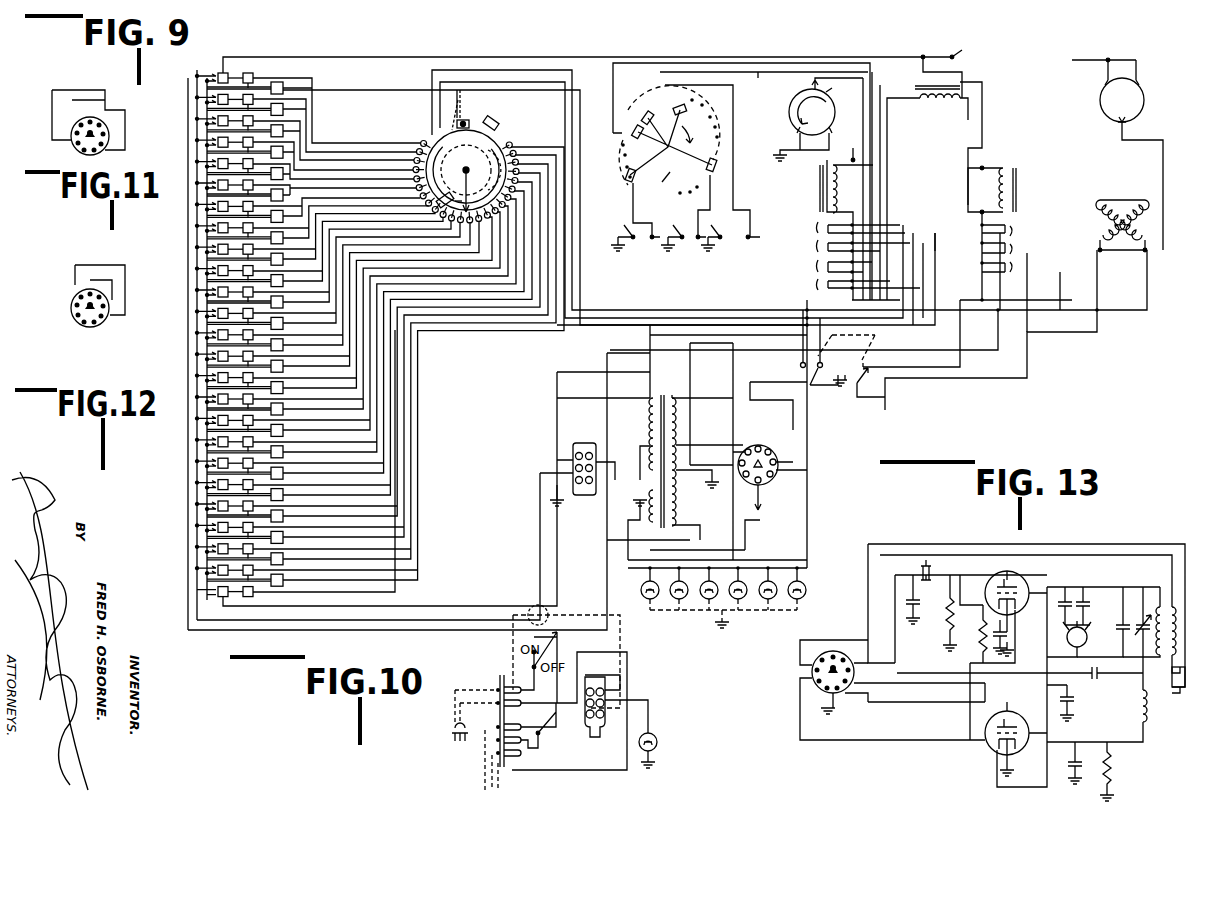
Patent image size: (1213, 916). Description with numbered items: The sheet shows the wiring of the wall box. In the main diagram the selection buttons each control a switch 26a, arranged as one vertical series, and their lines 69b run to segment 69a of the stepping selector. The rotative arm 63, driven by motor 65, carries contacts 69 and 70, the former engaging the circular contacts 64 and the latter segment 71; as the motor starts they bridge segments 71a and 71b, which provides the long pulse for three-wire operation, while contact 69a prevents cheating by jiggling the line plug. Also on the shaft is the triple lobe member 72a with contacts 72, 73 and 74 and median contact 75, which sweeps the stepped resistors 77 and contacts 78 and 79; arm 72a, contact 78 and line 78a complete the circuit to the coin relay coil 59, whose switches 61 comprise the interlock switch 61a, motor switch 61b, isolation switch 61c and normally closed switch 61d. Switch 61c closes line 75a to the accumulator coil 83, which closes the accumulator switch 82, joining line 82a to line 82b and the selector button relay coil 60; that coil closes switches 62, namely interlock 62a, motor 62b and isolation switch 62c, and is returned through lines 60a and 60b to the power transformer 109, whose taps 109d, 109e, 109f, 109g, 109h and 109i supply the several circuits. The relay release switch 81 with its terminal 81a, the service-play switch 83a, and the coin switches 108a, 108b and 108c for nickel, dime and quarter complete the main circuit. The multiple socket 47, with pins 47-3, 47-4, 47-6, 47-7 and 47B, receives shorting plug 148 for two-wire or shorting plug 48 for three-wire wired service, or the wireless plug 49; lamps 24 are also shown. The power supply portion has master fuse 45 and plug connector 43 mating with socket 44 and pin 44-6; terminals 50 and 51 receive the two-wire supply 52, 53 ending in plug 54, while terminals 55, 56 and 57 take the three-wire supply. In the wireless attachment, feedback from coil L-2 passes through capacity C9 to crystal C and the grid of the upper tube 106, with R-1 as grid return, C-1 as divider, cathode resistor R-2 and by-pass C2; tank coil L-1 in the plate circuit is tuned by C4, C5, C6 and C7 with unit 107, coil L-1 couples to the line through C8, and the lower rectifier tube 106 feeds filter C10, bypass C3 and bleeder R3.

In FIG. 11, the shorting plug 148 is at (70, 150).
In FIG. 12, the shorting plug 48 is at (72, 304).
In FIG. 9, the switch 26a is at (213, 600).
In FIG. 9, the contacts 64 is at (422, 140).
In FIG. 9, the rotative arm 63 is at (454, 110).
In FIG. 9, the contact 69 is at (470, 118).
In FIG. 9, the segment 69a is at (469, 199).
In FIG. 9, the line 69b is at (497, 330).
In FIG. 9, the contact 70 is at (458, 191).
In FIG. 9, the contacts 71 is at (472, 151).
In FIG. 9, the segment 71a is at (495, 130).
In FIG. 9, the segment 71b is at (470, 168).
In FIG. 9, the contact 72 is at (668, 147).
In FIG. 9, the triple lobe member 72a is at (677, 180).
In FIG. 9, the contact 73 is at (643, 201).
In FIG. 9, the contact 74 is at (703, 197).
In FIG. 9, the median contact 75 is at (666, 140).
In FIG. 9, the line 75a is at (758, 78).
In FIG. 9, the stepped resistors 77 is at (620, 148).
In FIG. 9, the contact 78 is at (638, 132).
In FIG. 9, the line 78a is at (716, 63).
In FIG. 9, the contact 79 is at (645, 110).
In FIG. 9, the relay release switch 81 is at (798, 120).
In FIG. 9, the counter terminal 81a is at (828, 103).
In FIG. 9, the accumulator switch 82 is at (958, 52).
In FIG. 9, the line 82a is at (800, 57).
In FIG. 9, the line 82b is at (984, 110).
In FIG. 9, the accumulator coil 83 is at (936, 106).
In FIG. 9, the testing and use switch 83a is at (855, 388).
In FIG. 9, the coin relay coil 59 is at (808, 182).
In FIG. 9, the selector button relay coil 60 is at (955, 186).
In FIG. 9, the line 60a is at (903, 189).
In FIG. 9, the line 60b is at (905, 192).
In FIG. 9, the switches 61 is at (810, 240).
In FIG. 9, the interlock switch 61a is at (815, 224).
In FIG. 9, the motor switch 61b is at (815, 242).
In FIG. 9, the isolation switch 61c is at (815, 264).
In FIG. 9, the switch 61d is at (815, 286).
In FIG. 9, the switches 62 is at (1025, 246).
In FIG. 9, the interlock switch 62a is at (1012, 228).
In FIG. 9, the motor switch 62b is at (1012, 246).
In FIG. 9, the isolation long pulse and selection switch 62c is at (1012, 268).
In FIG. 9, the motor 65 is at (1122, 255).
In FIG. 9, the coin switch 108a is at (628, 234).
In FIG. 9, the coin switch 108b is at (688, 236).
In FIG. 9, the coin switch 108c is at (736, 237).
In FIG. 9, the power transformer 109 is at (656, 478).
In FIG. 9, the tap 109d is at (684, 470).
In FIG. 9, the tap 109e is at (652, 398).
In FIG. 9, the tap 109f is at (650, 446).
In FIG. 9, the tap 109g is at (650, 460).
In FIG. 9, the tap 109h is at (680, 445).
In FIG. 9, the tap 109i is at (680, 400).
In FIG. 9, the socket type connector 44 is at (586, 498).
In FIG. 9, the pin 44-6 is at (575, 487).
In FIG. 9, the multiple socket 47 is at (780, 476).
In FIG. 9, the pin 47-3 is at (740, 460).
In FIG. 9, the pin 47-4 is at (748, 449).
In FIG. 9, the socket pin 47-6 is at (768, 449).
In FIG. 9, the pin 47-7 is at (774, 459).
In FIG. 9, the socket pin 47B is at (778, 462).
In FIG. 9, the lamps 24 is at (800, 584).
In FIG. 10, the master fuse 45 is at (546, 612).
In FIG. 10, the terminal 50 is at (502, 678).
In FIG. 10, the terminal 51 is at (497, 703).
In FIG. 10, the two-wire supply 52 is at (456, 694).
In FIG. 10, the two-wire supply 53 is at (458, 720).
In FIG. 10, the plug 54 is at (458, 740).
In FIG. 10, the terminal 55 is at (484, 763).
In FIG. 10, the terminal 56 is at (490, 772).
In FIG. 10, the terminal 57 is at (499, 780).
In FIG. 10, the plug type connector 43 is at (594, 737).
In FIG. 13, the plug 49 is at (830, 694).
In FIG. 13, the tube 106 is at (1002, 571).
In FIG. 13, the tuning unit 107 is at (1078, 648).
In FIG. 13, the crystal C is at (926, 560).
In FIG. 13, the condenser C-1 is at (912, 600).
In FIG. 13, the resistance R-1 is at (946, 632).
In FIG. 13, the cathode resistor R-2 is at (990, 648).
In FIG. 13, the condenser C2 is at (1012, 636).
In FIG. 13, the condenser C3 is at (1074, 712).
In FIG. 13, the capacity C4 is at (1066, 596).
In FIG. 13, the capacity C5 is at (1090, 598).
In FIG. 13, the capacity C6 is at (1122, 628).
In FIG. 13, the capacity C7 is at (1150, 606).
In FIG. 13, the capacity C8 is at (1183, 690).
In FIG. 13, the capacity C9 is at (1098, 690).
In FIG. 13, the condenser C10 is at (1066, 766).
In FIG. 13, the tank coil L-1 is at (1162, 640).
In FIG. 13, the coil L-2 is at (1148, 718).
In FIG. 13, the bleeder resistor R3 is at (1112, 768).